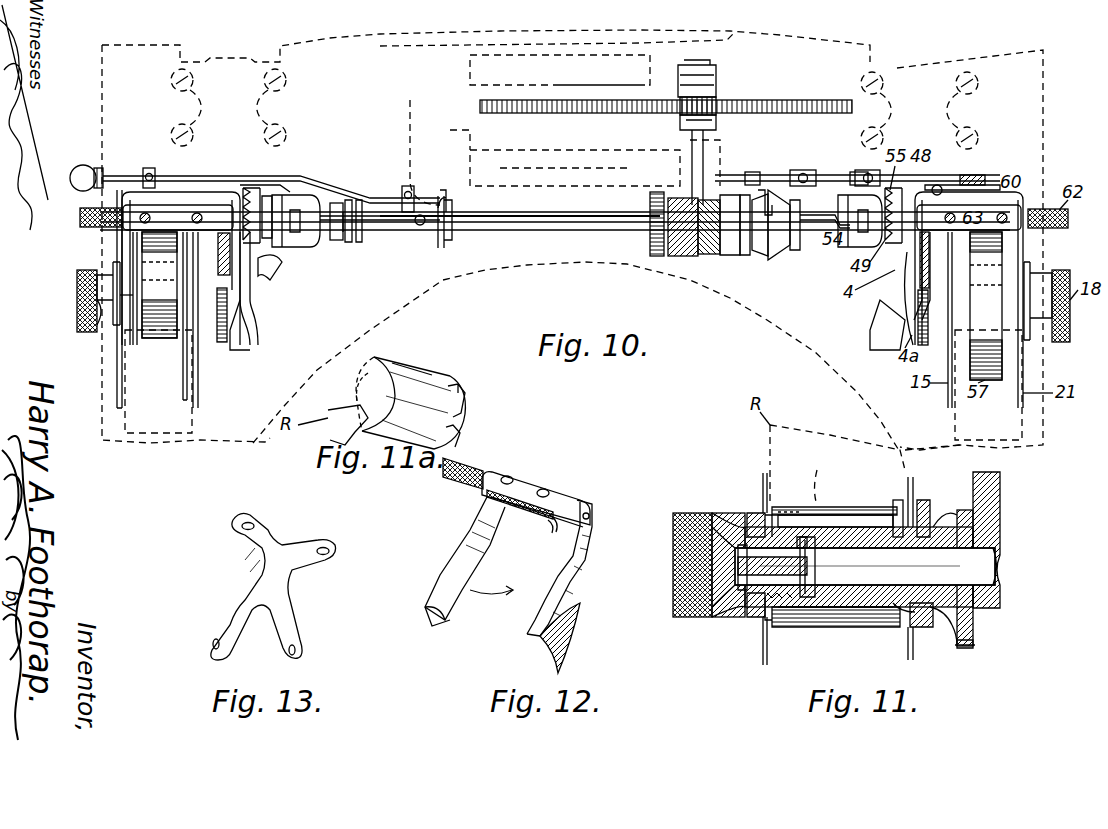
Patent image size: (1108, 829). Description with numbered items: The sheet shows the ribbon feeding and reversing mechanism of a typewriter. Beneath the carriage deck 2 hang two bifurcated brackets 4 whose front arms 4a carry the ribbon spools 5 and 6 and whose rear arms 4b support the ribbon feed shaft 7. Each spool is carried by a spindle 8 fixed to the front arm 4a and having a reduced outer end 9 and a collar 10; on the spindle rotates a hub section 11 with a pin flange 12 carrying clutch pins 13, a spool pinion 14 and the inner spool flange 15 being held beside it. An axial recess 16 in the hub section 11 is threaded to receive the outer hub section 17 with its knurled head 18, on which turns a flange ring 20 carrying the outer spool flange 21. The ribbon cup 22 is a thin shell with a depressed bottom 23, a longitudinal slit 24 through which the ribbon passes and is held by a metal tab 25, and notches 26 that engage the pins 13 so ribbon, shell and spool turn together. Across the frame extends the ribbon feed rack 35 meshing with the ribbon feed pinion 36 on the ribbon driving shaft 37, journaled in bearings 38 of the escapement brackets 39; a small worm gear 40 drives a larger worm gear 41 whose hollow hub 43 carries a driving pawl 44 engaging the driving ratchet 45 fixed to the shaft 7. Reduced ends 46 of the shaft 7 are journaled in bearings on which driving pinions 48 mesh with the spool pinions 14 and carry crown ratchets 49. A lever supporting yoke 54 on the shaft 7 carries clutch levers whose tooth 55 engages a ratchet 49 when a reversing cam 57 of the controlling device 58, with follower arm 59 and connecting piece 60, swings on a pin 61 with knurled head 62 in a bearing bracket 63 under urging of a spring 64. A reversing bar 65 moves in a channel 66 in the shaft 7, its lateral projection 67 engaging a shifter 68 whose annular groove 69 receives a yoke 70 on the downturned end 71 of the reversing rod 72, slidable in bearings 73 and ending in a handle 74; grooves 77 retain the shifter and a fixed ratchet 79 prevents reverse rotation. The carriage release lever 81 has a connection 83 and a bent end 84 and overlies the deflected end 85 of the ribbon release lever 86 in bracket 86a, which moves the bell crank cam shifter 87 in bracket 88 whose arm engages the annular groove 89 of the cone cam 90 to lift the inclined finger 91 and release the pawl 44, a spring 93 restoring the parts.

In FIG. 10, the deck 2 is at (505, 270).
In FIG. 10, the bracket 4 is at (255, 265).
In FIG. 13, the bracket 4 is at (272, 540).
In FIG. 10, the front arm 4a is at (235, 320).
In FIG. 13, the front arm 4a is at (297, 628).
In FIG. 11, the front arm 4a is at (1000, 515).
In FIG. 10, the rear arm 4b is at (940, 255).
In FIG. 13, the rear arm 4b is at (232, 612).
In FIG. 10, the ribbon spool 5 is at (118, 318).
In FIG. 11, the ribbon spool 5 is at (763, 660).
In FIG. 10, the ribbon spool 6 is at (1023, 372).
In FIG. 10, the ribbon feed shaft 7 is at (585, 232).
In FIG. 11, the spindle 8 is at (880, 585).
In FIG. 11, the reduced outer end 9 is at (765, 575).
In FIG. 11, the collar 10 is at (805, 597).
In FIG. 11, the hub section 11 is at (845, 527).
In FIG. 11, the pin flange 12 is at (900, 608).
In FIG. 11, the clutch pin 13 is at (898, 500).
In FIG. 10, the spool pinion 14 is at (222, 342).
In FIG. 11, the spool pinion 14 is at (960, 648).
In FIG. 10, the inner spool flange 15 is at (198, 397).
In FIG. 11, the inner spool flange 15 is at (914, 485).
In FIG. 11, the axial recess 16 is at (800, 537).
In FIG. 11, the outer hub section 17 is at (745, 590).
In FIG. 10, the knurled head 18 is at (77, 278).
In FIG. 11, the knurled head 18 is at (675, 513).
In FIG. 11, the flange ring 20 is at (752, 513).
In FIG. 10, the outer spool flange 21 is at (117, 385).
In FIG. 11, the outer spool flange 21 is at (763, 500).
In FIG. 10, the ribbon cup 22 is at (133, 262).
In FIG. 11A, the ribbon cup 22 is at (428, 372).
In FIG. 11, the ribbon cup 22 is at (835, 627).
In FIG. 11, the depressed bottom 23 is at (752, 527).
In FIG. 11A, the longitudinal slit 24 is at (364, 398).
In FIG. 11, the longitudinal slit 24 is at (830, 515).
In FIG. 11A, the metal tab 25 is at (385, 372).
In FIG. 11, the metal tab 25 is at (818, 507).
In FIG. 11A, the notch 26 is at (462, 396).
In FIG. 11, the notch 26 is at (920, 500).
In FIG. 10, the ribbon feed rack 35 is at (800, 100).
In FIG. 10, the ribbon feed pinion 36 is at (745, 98).
In FIG. 10, the ribbon driving shaft 37 is at (703, 155).
In FIG. 10, the bearing 38 is at (694, 78).
In FIG. 10, the escapement bracket 39 is at (575, 113).
In FIG. 10, the worm gear 40 is at (730, 250).
In FIG. 10, the worm gear 41 is at (695, 256).
In FIG. 10, the hollow hub 43 is at (716, 254).
In FIG. 10, the driving pawl 44 is at (762, 256).
In FIG. 10, the driving ratchet 45 is at (748, 255).
In FIG. 10, the reduced end 46 is at (210, 195).
In FIG. 10, the driving pinion 48 is at (257, 154).
In FIG. 10, the crown ratchet 49 is at (252, 195).
In FIG. 10, the lever supporting yoke 54 is at (305, 195).
In FIG. 10, the tooth 55 is at (275, 200).
In FIG. 10, the reversing cam 57 is at (282, 268).
In FIG. 12, the reversing cam 57 is at (548, 648).
In FIG. 12, the controlling device 58 is at (556, 495).
In FIG. 10, the follower arm 59 is at (150, 338).
In FIG. 12, the follower arm 59 is at (460, 550).
In FIG. 10, the connecting piece 60 is at (238, 192).
In FIG. 12, the connecting piece 60 is at (584, 502).
In FIG. 12, the pin 61 is at (554, 527).
In FIG. 10, the knurled head 62 is at (80, 222).
In FIG. 12, the knurled head 62 is at (452, 480).
In FIG. 10, the bearing bracket 63 is at (178, 217).
In FIG. 12, the bearing bracket 63 is at (522, 478).
In FIG. 12, the spring 64 is at (492, 503).
In FIG. 10, the reversing bar 65 is at (336, 240).
In FIG. 10, the longitudinal channel 66 is at (560, 212).
In FIG. 10, the lateral projection 67 is at (418, 226).
In FIG. 10, the shifter 68 is at (402, 228).
In FIG. 10, the annular groove 69 is at (450, 240).
In FIG. 10, the yoke 70 is at (440, 248).
In FIG. 10, the downturned end 71 is at (448, 198).
In FIG. 10, the reversing rod 72 is at (115, 176).
In FIG. 10, the bearing 73 is at (156, 170).
In FIG. 10, the handle 74 is at (82, 166).
In FIG. 10, the annular groove 77 is at (358, 242).
In FIG. 10, the fixed ratchet 79 is at (650, 245).
In FIG. 10, the carriage release lever 81 is at (618, 185).
In FIG. 10, the connection 83 is at (985, 185).
In FIG. 10, the end of carriage release lever 84 is at (408, 120).
In FIG. 10, the laterally deflected end 85 is at (975, 175).
In FIG. 10, the ribbon release lever 86 is at (818, 175).
In FIG. 10, the bracket 86a is at (866, 170).
In FIG. 10, the bell crank cam shifter 87 is at (753, 172).
In FIG. 10, the bracket 88 is at (803, 170).
In FIG. 10, the annular groove 89 is at (800, 250).
In FIG. 10, the cam 90 is at (785, 245).
In FIG. 10, the inclined finger 91 is at (775, 194).
In FIG. 10, the spring 93 is at (938, 185).